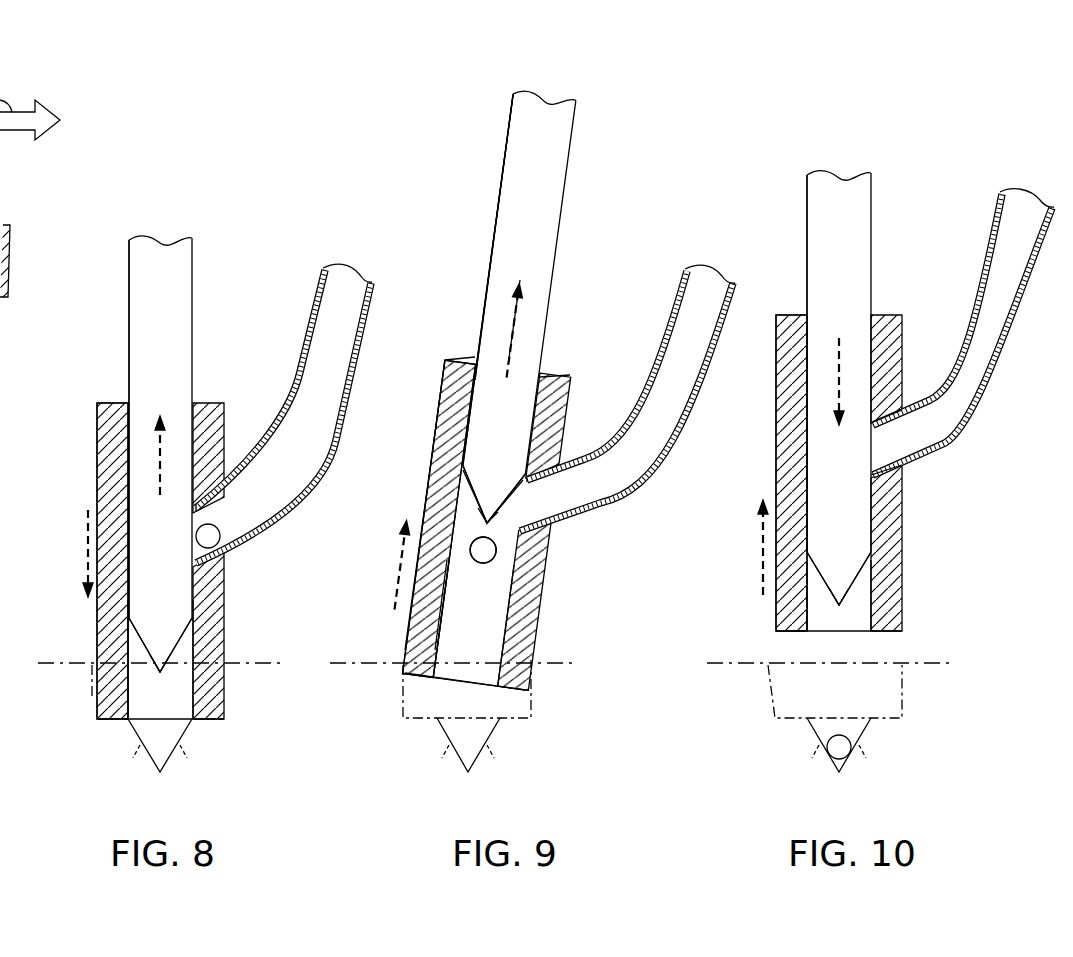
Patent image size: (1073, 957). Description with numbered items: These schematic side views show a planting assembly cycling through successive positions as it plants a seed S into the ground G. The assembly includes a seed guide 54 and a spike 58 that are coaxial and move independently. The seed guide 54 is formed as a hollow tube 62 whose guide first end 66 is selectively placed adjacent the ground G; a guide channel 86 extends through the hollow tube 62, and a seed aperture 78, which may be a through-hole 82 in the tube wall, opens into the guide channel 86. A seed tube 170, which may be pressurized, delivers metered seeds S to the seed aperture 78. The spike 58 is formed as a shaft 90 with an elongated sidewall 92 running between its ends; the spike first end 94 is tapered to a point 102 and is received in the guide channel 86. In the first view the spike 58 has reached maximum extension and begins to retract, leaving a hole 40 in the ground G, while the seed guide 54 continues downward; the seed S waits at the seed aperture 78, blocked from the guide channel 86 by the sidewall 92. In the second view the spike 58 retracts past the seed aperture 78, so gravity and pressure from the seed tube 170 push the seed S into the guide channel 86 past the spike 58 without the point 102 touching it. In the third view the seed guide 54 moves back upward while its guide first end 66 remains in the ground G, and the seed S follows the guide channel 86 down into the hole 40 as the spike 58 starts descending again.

In FIG. 8, the hole 40 is at (132, 772).
In FIG. 9, the hole 40 is at (450, 770).
In FIG. 10, the hole 40 is at (808, 760).
In FIG. 8, the seed guide 54 is at (110, 436).
In FIG. 10, the seed guide 54 is at (790, 373).
In FIG. 8, the spike 58 is at (168, 290).
In FIG. 10, the spike 58 is at (835, 279).
In FIG. 8, the hollow tube 62 is at (112, 462).
In FIG. 10, the hollow tube 62 is at (790, 425).
In FIG. 8, the guide first end 66 is at (212, 722).
In FIG. 10, the guide first end 66 is at (892, 633).
In FIG. 8, the seed aperture 78 is at (200, 518).
In FIG. 9, the seed aperture 78 is at (565, 490).
In FIG. 10, the seed aperture 78 is at (915, 448).
In FIG. 9, the through-hole 82 is at (560, 477).
In FIG. 10, the through-hole 82 is at (893, 420).
In FIG. 8, the guide channel 86 is at (155, 690).
In FIG. 10, the guide channel 86 is at (862, 583).
In FIG. 8, the shaft 90 is at (153, 358).
In FIG. 10, the shaft 90 is at (830, 222).
In FIG. 8, the sidewall 92 is at (133, 385).
In FIG. 10, the sidewall 92 is at (820, 244).
In FIG. 8, the spike first end 94 is at (160, 598).
In FIG. 10, the spike first end 94 is at (828, 542).
In FIG. 8, the point 102 is at (160, 672).
In FIG. 10, the point 102 is at (845, 602).
In FIG. 8, the seed tube 170 is at (323, 292).
In FIG. 9, the seed tube 170 is at (627, 398).
In FIG. 10, the seed tube 170 is at (982, 262).
In FIG. 8, the seed S is at (233, 546).
In FIG. 10, the seed S is at (852, 748).
In FIG. 8, the ground G is at (80, 663).
In FIG. 9, the ground G is at (368, 663).
In FIG. 10, the ground G is at (745, 663).